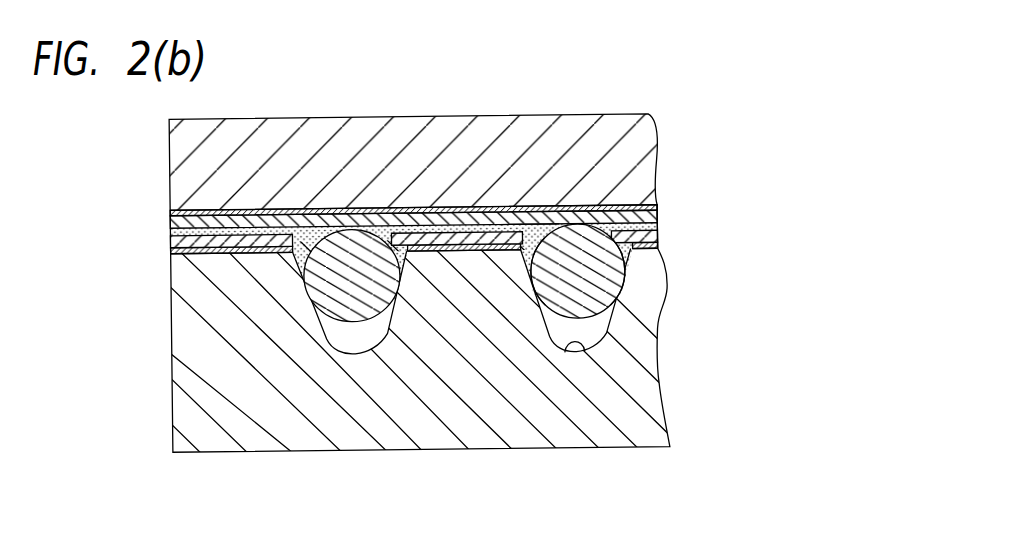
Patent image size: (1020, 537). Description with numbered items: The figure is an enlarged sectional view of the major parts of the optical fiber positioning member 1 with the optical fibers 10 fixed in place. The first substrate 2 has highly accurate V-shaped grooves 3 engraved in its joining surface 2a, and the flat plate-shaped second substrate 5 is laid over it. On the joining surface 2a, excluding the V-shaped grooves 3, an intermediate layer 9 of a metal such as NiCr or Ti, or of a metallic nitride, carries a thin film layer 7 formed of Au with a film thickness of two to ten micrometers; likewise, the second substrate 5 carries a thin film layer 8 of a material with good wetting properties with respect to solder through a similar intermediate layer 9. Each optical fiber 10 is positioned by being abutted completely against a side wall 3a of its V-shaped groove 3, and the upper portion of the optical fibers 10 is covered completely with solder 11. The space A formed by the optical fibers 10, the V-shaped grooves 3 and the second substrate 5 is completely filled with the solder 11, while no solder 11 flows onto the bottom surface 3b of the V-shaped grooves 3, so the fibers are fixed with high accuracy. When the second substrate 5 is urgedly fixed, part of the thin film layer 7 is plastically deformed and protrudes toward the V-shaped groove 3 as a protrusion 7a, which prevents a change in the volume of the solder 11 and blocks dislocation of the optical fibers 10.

The optical fiber positioning member 1 is at (508, 113).
The first substrate 2 is at (393, 433).
The joining surface 2a is at (668, 262).
The V-shaped grooves 3 is at (590, 330).
The side wall 3a is at (620, 318).
The bottom surface 3b is at (568, 345).
The second substrate 5 is at (405, 133).
The thin film layer 7 is at (660, 238).
The protrusion 7a is at (533, 222).
The thin film layer 8 is at (660, 219).
The intermediate layer 9 is at (660, 210).
The optical fibers 10 is at (560, 290).
The solder 11 is at (660, 228).
The space A is at (660, 205).